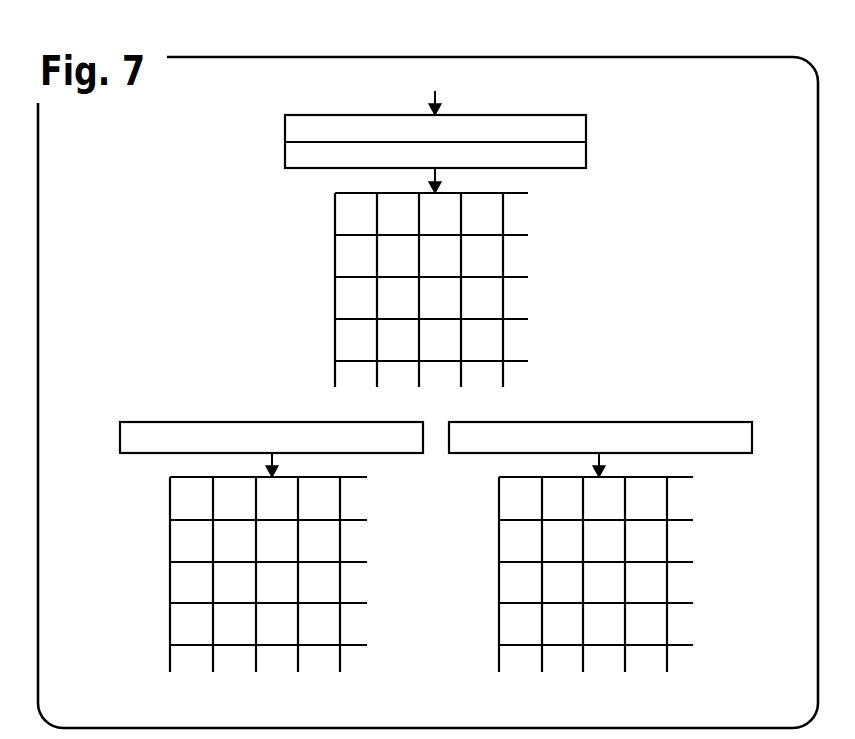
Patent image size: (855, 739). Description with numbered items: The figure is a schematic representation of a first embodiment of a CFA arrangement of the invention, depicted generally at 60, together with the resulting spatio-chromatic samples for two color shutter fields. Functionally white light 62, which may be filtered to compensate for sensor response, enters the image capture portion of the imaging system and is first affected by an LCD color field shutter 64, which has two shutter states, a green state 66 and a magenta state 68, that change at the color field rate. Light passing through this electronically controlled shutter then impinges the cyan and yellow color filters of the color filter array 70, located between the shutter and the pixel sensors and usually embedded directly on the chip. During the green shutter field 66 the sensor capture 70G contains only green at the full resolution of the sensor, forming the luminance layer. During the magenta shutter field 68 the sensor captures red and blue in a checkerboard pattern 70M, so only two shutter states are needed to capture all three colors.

The color filter array embodiment 60 is at (168, 278).
The functionally white light 62 is at (468, 80).
The LCD color field shutter 64 is at (236, 149).
The green shutter state 66 is at (542, 115).
The magenta shutter state 68 is at (542, 168).
The color filter array 70 is at (283, 301).
The green sensor capture 70G is at (133, 574).
The red and blue checkerboard pattern 70M is at (727, 573).